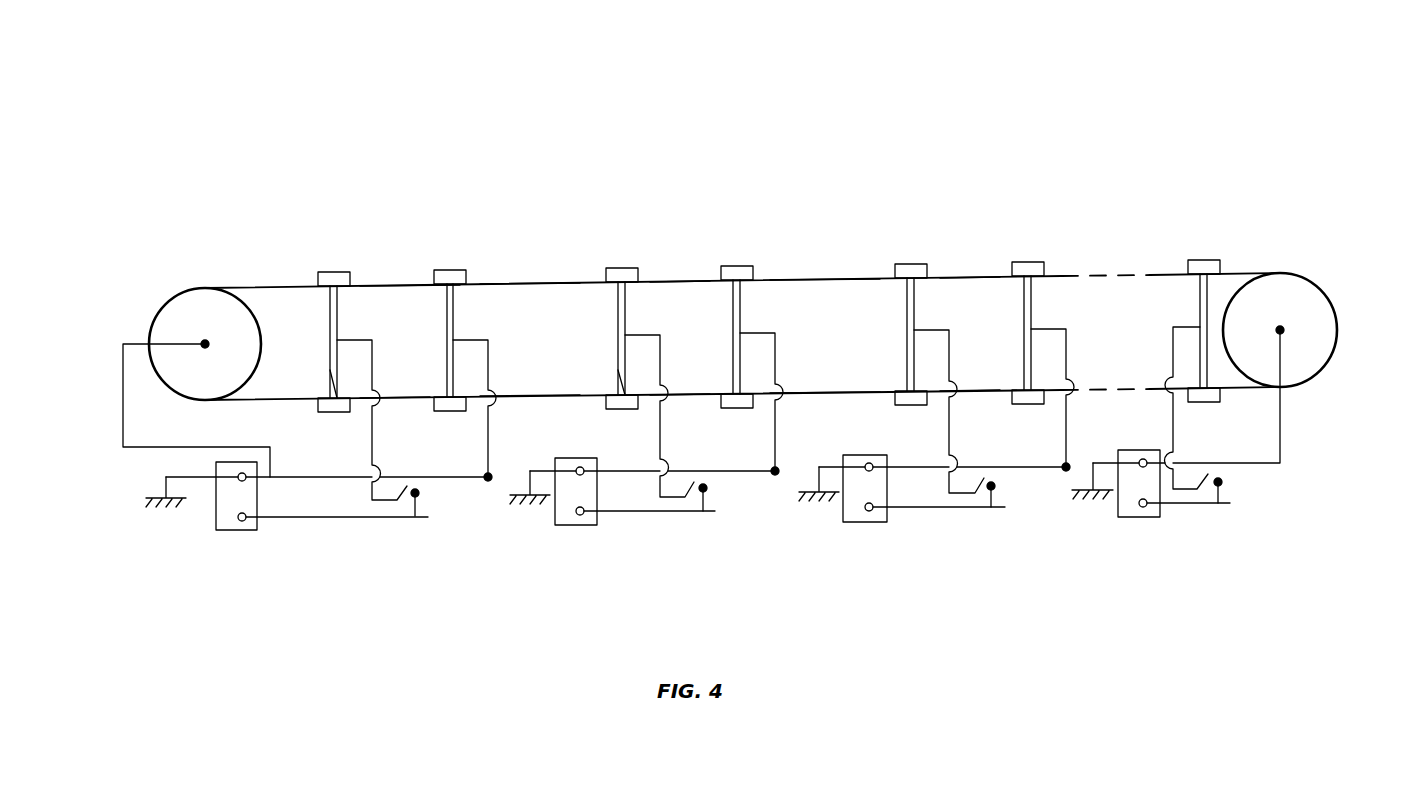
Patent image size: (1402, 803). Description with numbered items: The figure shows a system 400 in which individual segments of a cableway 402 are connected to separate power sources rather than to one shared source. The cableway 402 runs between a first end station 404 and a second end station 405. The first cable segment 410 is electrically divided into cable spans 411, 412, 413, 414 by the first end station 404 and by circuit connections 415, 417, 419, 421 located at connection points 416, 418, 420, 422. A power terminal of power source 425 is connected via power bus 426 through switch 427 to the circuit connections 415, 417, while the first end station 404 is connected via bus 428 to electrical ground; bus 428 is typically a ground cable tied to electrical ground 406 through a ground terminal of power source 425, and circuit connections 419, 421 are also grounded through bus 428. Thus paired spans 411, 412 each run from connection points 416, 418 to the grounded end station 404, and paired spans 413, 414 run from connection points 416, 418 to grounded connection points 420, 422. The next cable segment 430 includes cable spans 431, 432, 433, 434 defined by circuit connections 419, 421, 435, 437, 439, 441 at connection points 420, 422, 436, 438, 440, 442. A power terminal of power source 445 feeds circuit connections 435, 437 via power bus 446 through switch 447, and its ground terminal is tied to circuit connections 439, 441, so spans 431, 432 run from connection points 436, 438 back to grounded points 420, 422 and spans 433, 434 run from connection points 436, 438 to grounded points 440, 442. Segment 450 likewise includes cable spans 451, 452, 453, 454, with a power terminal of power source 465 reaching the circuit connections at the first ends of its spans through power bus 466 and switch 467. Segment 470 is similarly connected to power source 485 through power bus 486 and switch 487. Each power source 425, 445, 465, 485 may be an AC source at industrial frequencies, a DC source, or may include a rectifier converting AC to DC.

The system 400 is at (351, 72).
The cableway 402 is at (238, 286).
The first end station 404 is at (163, 295).
The second end station 405 is at (1322, 283).
The electrical ground 406 is at (143, 506).
The cable segment 410 is at (318, 193).
The cable span 411 is at (265, 287).
The cable span 412 is at (279, 398).
The cable span 413 is at (407, 285).
The cable span 414 is at (400, 400).
The circuit connection 415 is at (335, 271).
The connection point 416 is at (340, 294).
The circuit connection 417 is at (318, 407).
The connection point 418 is at (330, 394).
The circuit connection 419 is at (454, 270).
The connection point 420 is at (454, 289).
The circuit connection 421 is at (458, 412).
The connection point 422 is at (446, 394).
The power source 425 is at (226, 531).
The power bus 426 is at (308, 518).
The switch 427 is at (387, 505).
The bus 428 is at (293, 475).
The cable segment 430 is at (650, 215).
The cable span 431 is at (520, 283).
The cable span 432 is at (523, 398).
The cable span 433 is at (683, 281).
The cable span 434 is at (683, 398).
The circuit connection 435 is at (627, 268).
The connection point 436 is at (617, 288).
The circuit connection 437 is at (624, 410).
The connection point 438 is at (617, 392).
The circuit connection 439 is at (745, 266).
The connection point 440 is at (742, 287).
The circuit connection 441 is at (738, 409).
The connection point 442 is at (732, 392).
The power source 445 is at (560, 526).
The power bus 446 is at (640, 512).
The switch 447 is at (676, 498).
The segment 450 is at (926, 225).
The cable span 451 is at (818, 278).
The cable span 452 is at (845, 390).
The cable span 453 is at (973, 277).
The cable span 454 is at (990, 388).
The power source 465 is at (852, 523).
The power bus 466 is at (917, 508).
The switch 467 is at (966, 495).
The segment 470 is at (1215, 222).
The power source 485 is at (1127, 518).
The power bus 486 is at (1185, 504).
The switch 487 is at (1200, 491).